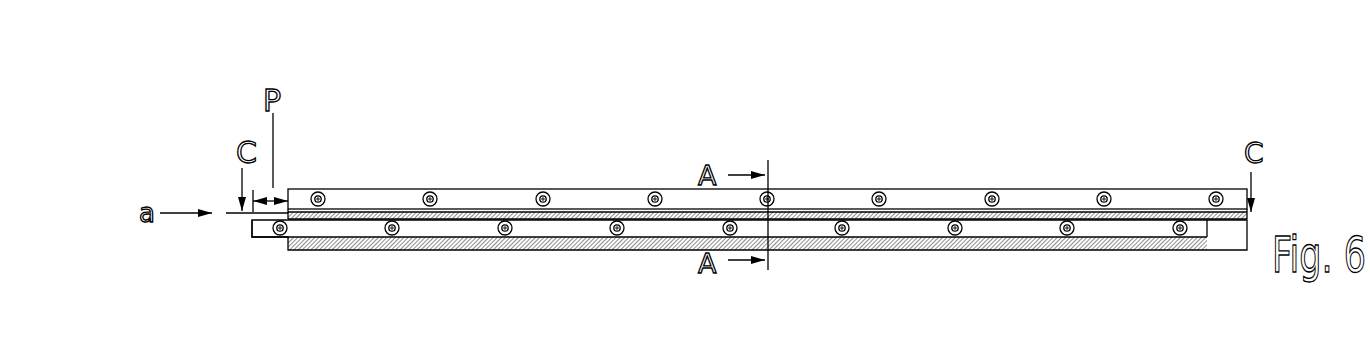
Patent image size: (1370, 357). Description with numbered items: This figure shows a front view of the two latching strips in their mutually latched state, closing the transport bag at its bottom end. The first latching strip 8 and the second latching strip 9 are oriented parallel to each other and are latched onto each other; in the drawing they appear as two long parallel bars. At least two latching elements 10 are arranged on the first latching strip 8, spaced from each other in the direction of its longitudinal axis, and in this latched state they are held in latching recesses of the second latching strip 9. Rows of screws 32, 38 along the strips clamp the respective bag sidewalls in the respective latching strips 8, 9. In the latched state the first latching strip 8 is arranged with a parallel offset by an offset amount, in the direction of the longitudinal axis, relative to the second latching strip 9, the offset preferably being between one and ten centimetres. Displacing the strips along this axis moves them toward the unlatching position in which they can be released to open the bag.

The first latching strip 8 is at (359, 200).
The latching elements 10 is at (387, 240).
The second latching strip 9 is at (262, 228).
The screws 32 is at (432, 192).
The screws 38 is at (505, 223).